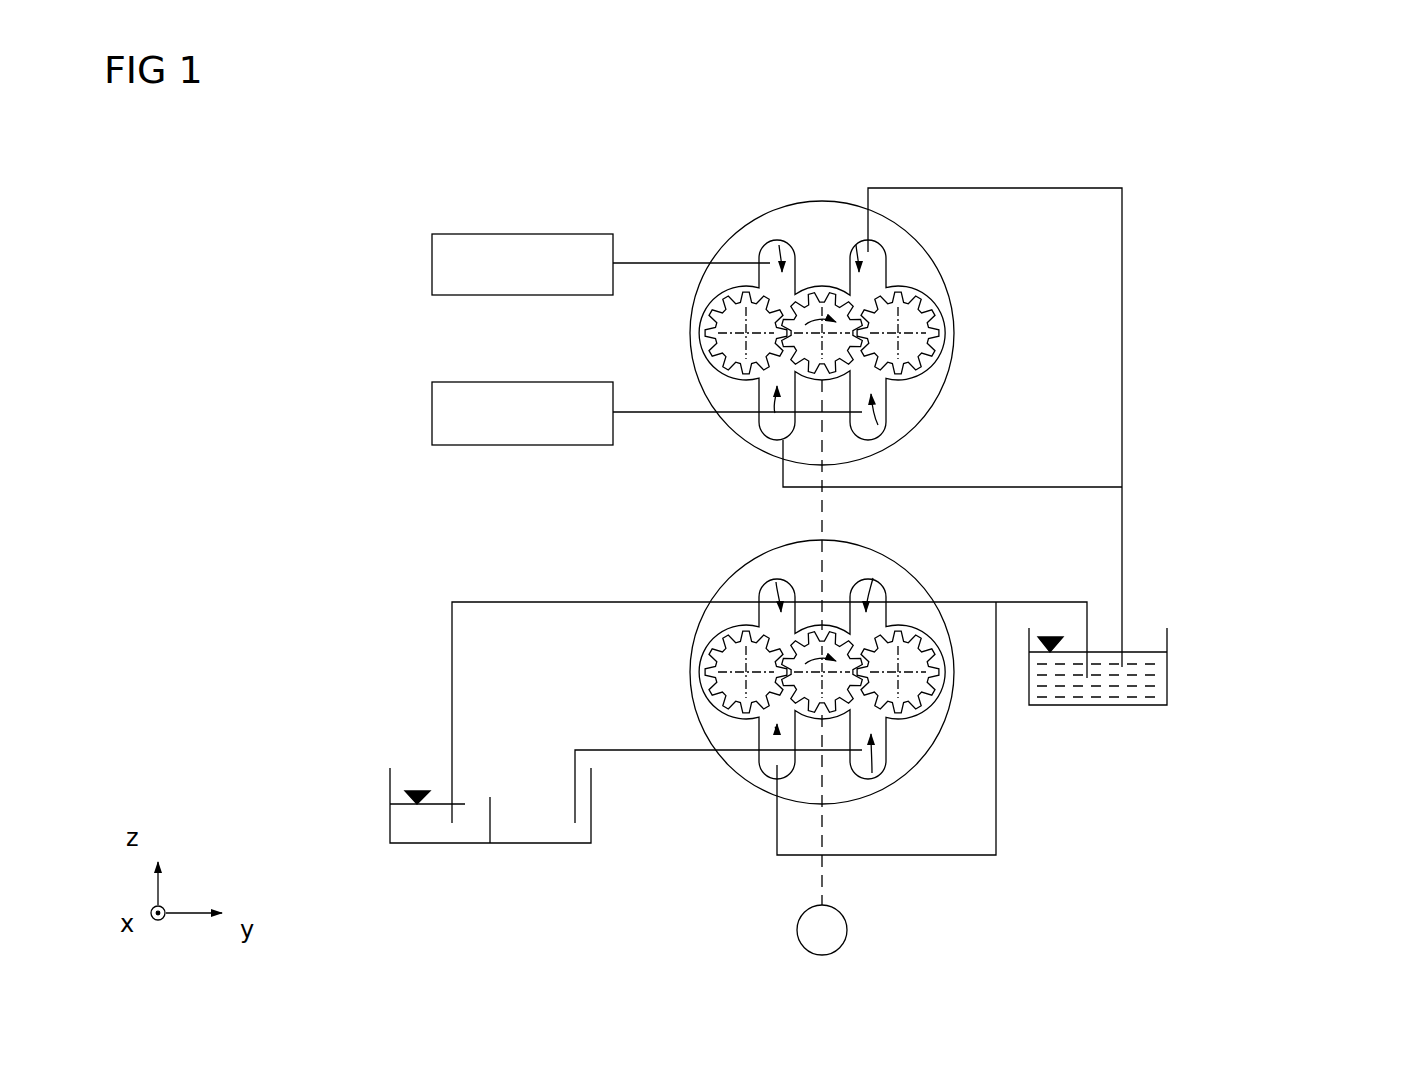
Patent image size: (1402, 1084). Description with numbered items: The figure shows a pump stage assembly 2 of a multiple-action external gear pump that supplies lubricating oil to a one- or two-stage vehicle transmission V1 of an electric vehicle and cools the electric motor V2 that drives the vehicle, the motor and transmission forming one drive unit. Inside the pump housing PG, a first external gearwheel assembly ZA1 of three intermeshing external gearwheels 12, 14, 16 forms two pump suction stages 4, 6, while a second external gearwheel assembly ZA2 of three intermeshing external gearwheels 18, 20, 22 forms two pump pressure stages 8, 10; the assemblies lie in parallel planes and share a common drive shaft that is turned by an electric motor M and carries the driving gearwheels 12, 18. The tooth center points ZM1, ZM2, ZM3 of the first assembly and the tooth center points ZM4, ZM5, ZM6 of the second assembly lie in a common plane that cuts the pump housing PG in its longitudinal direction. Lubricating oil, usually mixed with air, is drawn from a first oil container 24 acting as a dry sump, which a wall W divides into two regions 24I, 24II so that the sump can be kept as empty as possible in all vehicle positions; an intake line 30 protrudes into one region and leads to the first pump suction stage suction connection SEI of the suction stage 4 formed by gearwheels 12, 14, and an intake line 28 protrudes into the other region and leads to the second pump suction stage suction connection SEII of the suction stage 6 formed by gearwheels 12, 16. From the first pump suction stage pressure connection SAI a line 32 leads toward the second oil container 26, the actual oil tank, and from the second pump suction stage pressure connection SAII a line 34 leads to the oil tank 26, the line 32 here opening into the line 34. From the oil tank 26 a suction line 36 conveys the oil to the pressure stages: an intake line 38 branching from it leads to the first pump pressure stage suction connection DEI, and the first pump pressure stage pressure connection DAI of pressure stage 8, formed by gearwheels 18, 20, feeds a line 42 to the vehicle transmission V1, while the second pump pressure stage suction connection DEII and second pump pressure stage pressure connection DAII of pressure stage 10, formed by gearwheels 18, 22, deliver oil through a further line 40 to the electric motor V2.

The pump stage assembly 2 is at (1296, 114).
The first pump suction stage 4 is at (652, 668).
The second pump suction stage 6 is at (1024, 722).
The first pump pressure stage 8 is at (652, 338).
The second pump pressure stage 10 is at (1002, 320).
The external gearwheel 12 is at (786, 560).
The external gearwheel 14 is at (732, 658).
The external gearwheel 16 is at (918, 690).
The external gearwheel 18 is at (813, 200).
The external gearwheel 20 is at (732, 348).
The external gearwheel 22 is at (922, 346).
The first oil container 24 is at (444, 817).
The first region of the dry sump 24I is at (408, 823).
The second region of the dry sump 24II is at (537, 808).
The second oil container 26 is at (1224, 652).
The intake line 28 is at (615, 752).
The intake line 30 is at (452, 662).
The line 32 is at (963, 856).
The line 34 is at (1058, 602).
The suction line 36 is at (1124, 366).
The intake line 38 is at (1092, 487).
The line 40 is at (640, 414).
The line 42 is at (653, 262).
The vehicle transmission V1 is at (432, 263).
The electric motor V2 is at (432, 412).
The wall W is at (508, 818).
The pump housing PG is at (800, 225).
The electric motor M is at (822, 667).
The tooth center point ZM1 is at (745, 692).
The tooth center point ZM2 is at (740, 672).
The tooth center point ZM3 is at (917, 682).
The tooth center point ZM4 is at (824, 336).
The tooth center point ZM5 is at (742, 328).
The tooth center point ZM6 is at (908, 316).
The first pump pressure stage pressure connection DAI is at (779, 245).
The second pump pressure stage pressure connection DAII is at (893, 446).
The first pump pressure stage suction connection DEI is at (775, 413).
The second pump pressure stage suction connection DEII is at (856, 224).
The first pump suction stage pressure connection SAI is at (776, 730).
The second pump suction stage pressure connection SAII is at (873, 578).
The first pump suction stage suction connection SEI is at (776, 582).
The second pump suction stage suction connection SEII is at (872, 773).
The first external gearwheel assembly ZA1 is at (1162, 760).
The second external gearwheel assembly ZA2 is at (1222, 304).